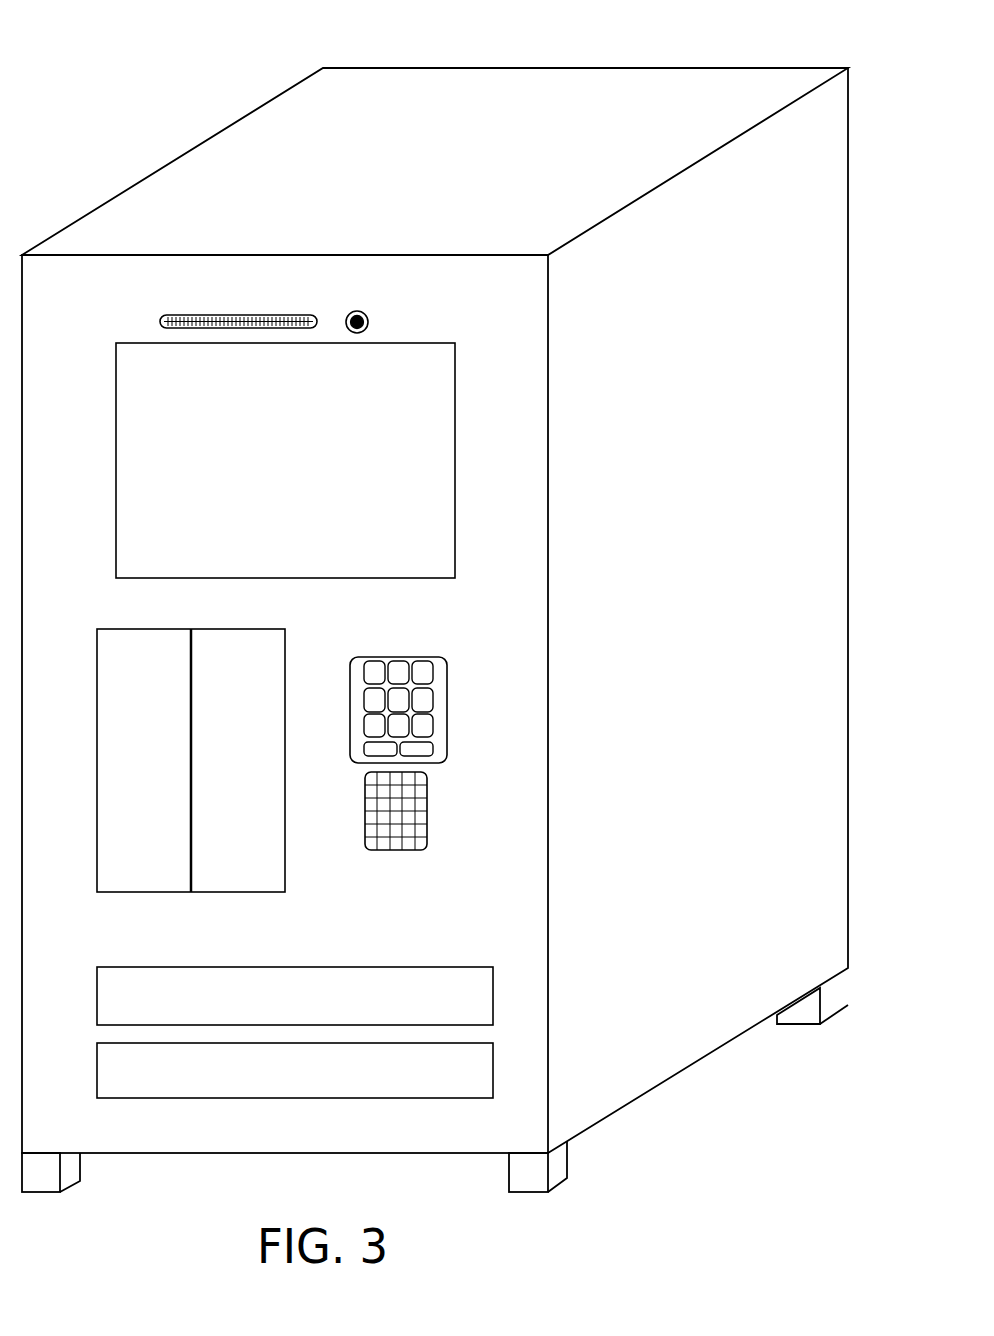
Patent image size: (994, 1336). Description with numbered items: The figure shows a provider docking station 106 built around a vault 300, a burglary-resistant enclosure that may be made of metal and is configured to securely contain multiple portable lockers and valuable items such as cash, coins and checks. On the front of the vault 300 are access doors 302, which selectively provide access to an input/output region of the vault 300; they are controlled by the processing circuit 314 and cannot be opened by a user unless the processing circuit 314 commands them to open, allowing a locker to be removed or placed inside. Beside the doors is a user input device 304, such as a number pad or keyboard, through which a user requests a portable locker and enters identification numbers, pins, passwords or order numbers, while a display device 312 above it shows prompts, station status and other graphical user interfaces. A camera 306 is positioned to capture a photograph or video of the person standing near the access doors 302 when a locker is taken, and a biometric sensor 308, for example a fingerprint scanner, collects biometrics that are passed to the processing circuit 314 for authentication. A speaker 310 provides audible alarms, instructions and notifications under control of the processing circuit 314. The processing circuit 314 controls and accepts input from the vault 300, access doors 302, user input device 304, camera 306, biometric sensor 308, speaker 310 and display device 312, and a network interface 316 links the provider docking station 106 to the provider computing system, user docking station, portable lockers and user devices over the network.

The provider docking station 106 is at (124, 96).
The vault 300 is at (680, 105).
The access doors 302 is at (173, 648).
The user input device 304 is at (372, 660).
The camera 306 is at (369, 321).
The biometric sensor 308 is at (394, 850).
The speaker 310 is at (168, 316).
The display device 312 is at (120, 348).
The processing circuit 314 is at (153, 1098).
The network interface 316 is at (163, 967).